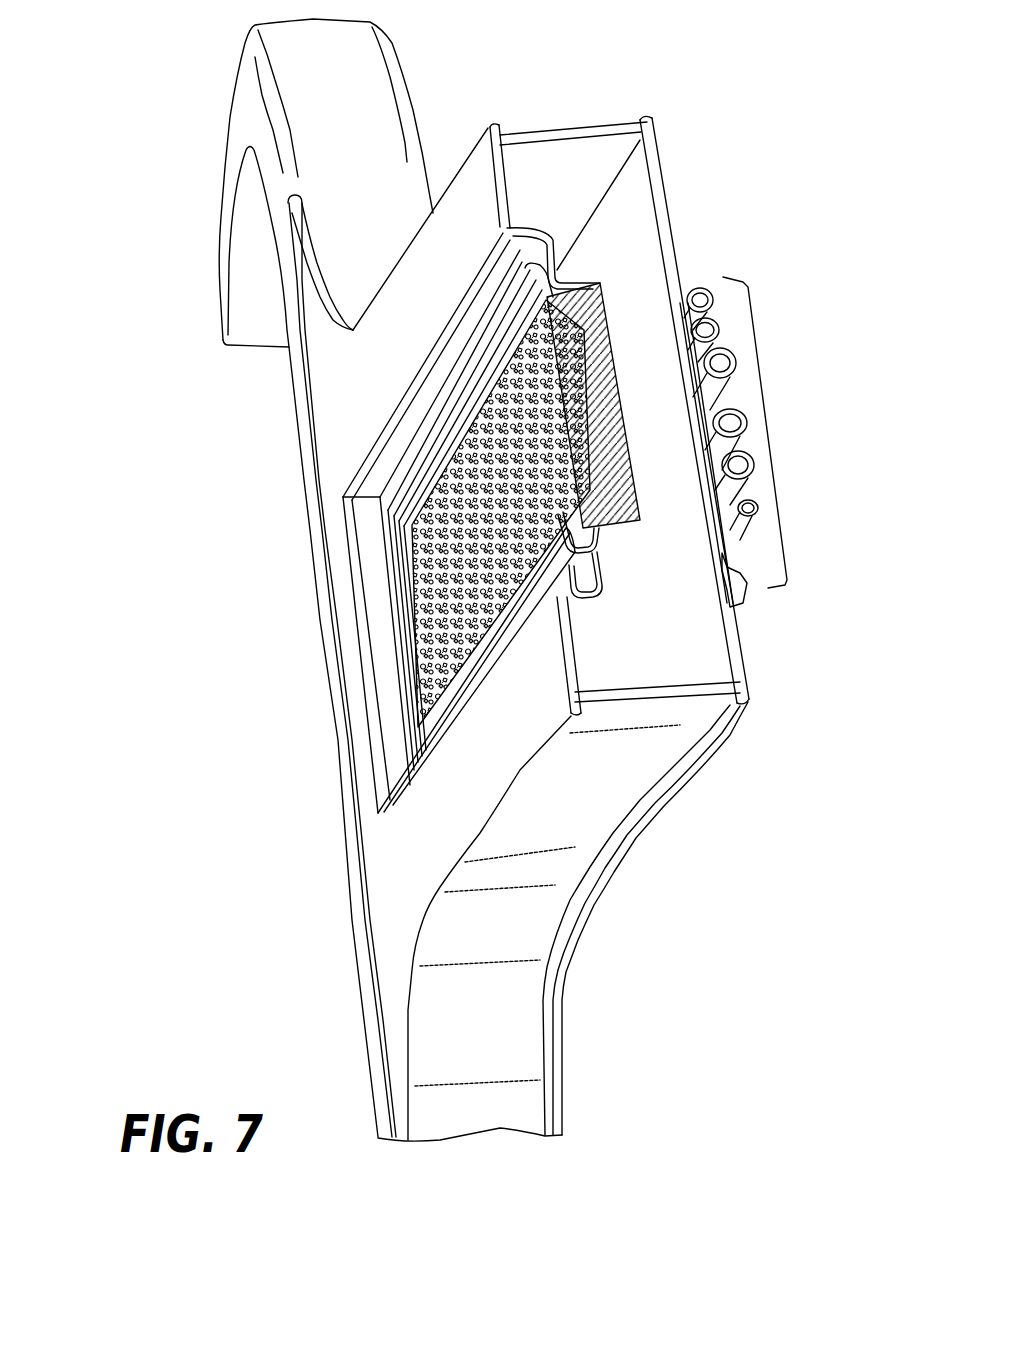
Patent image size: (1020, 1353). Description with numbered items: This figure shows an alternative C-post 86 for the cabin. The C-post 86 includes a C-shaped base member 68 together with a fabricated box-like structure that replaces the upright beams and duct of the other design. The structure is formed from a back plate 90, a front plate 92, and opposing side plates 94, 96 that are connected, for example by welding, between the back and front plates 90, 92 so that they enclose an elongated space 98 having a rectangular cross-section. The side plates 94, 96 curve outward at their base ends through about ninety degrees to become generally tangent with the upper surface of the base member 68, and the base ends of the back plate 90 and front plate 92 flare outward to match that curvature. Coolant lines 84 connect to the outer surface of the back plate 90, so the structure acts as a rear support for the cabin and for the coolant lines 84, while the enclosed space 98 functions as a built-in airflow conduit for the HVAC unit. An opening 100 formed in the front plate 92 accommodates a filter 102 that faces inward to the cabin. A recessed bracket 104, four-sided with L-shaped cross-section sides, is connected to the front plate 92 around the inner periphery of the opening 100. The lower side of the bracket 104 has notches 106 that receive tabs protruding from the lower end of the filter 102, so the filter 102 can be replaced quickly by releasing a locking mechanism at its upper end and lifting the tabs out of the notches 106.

The C-shaped base member 68 is at (367, 93).
The coolant lines 84 is at (762, 410).
The C-post 86 is at (703, 46).
The back plate 90 is at (732, 662).
The front plate 92 is at (578, 666).
The side plate 94 is at (597, 785).
The side plate 96 is at (550, 128).
The enclosed space 98 is at (624, 229).
The opening 100 is at (363, 521).
The filter 102 is at (427, 638).
The recessed bracket 104 is at (558, 275).
The notches 106 is at (380, 577).